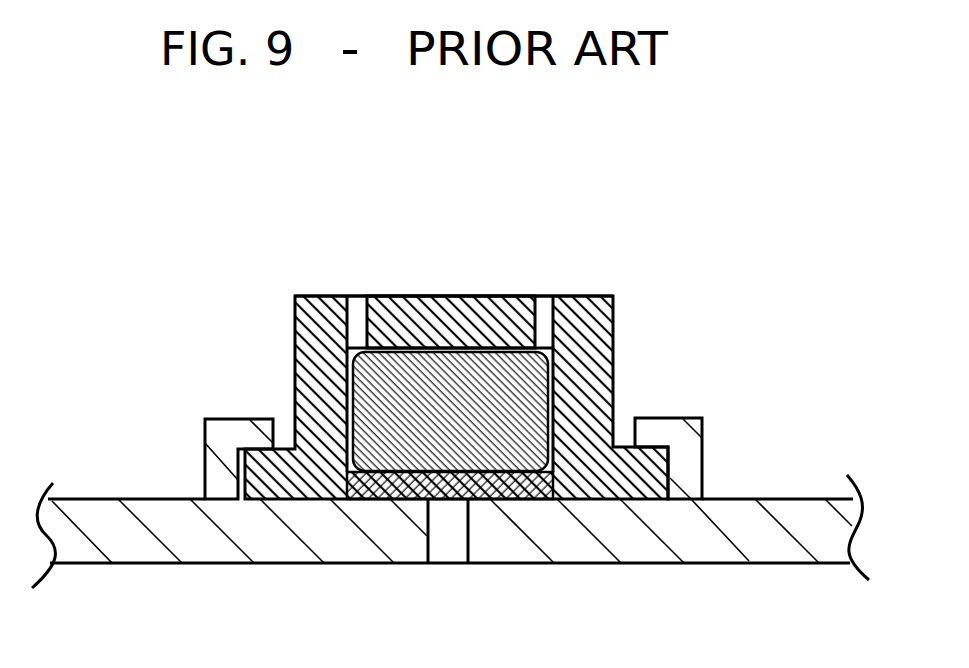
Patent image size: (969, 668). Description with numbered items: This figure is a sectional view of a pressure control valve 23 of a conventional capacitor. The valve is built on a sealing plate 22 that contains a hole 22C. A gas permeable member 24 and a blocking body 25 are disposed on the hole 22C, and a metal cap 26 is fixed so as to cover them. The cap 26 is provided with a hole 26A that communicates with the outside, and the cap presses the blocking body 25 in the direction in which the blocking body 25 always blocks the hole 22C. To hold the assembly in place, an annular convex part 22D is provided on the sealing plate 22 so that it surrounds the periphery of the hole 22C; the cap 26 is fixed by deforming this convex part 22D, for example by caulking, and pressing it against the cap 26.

The sealing plate 22 is at (698, 550).
The hole 22C is at (450, 545).
The annular convex part 22D is at (683, 472).
The pressure control valve 23 is at (650, 257).
The gas permeable member 24 is at (368, 500).
The blocking body 25 is at (518, 379).
The metal cap 26 is at (312, 358).
The hole 26A is at (450, 269).